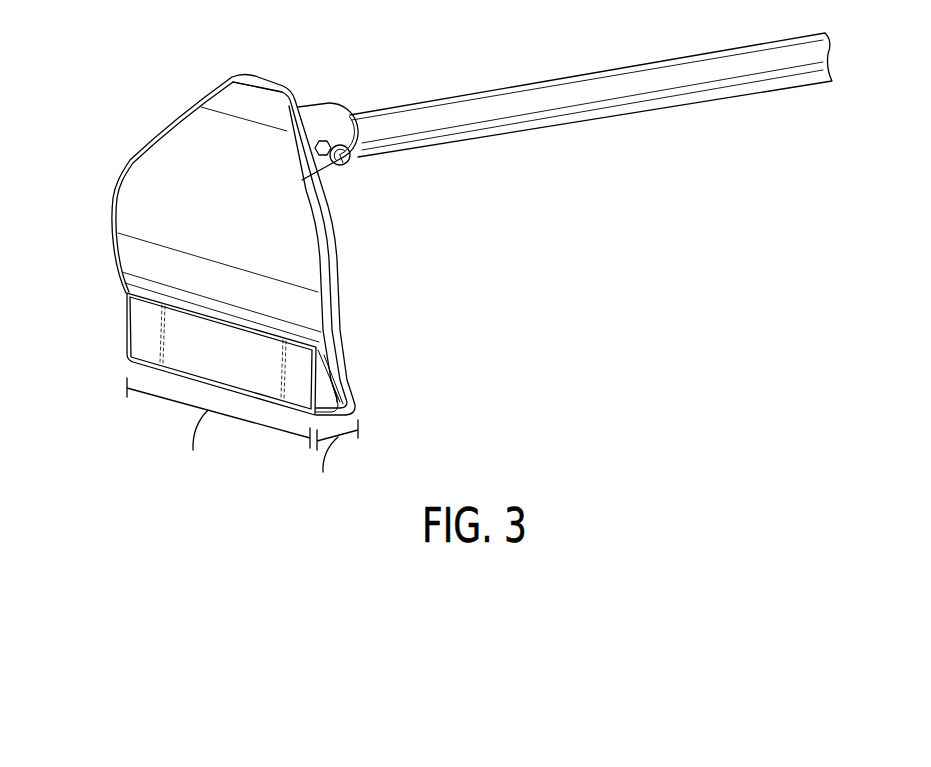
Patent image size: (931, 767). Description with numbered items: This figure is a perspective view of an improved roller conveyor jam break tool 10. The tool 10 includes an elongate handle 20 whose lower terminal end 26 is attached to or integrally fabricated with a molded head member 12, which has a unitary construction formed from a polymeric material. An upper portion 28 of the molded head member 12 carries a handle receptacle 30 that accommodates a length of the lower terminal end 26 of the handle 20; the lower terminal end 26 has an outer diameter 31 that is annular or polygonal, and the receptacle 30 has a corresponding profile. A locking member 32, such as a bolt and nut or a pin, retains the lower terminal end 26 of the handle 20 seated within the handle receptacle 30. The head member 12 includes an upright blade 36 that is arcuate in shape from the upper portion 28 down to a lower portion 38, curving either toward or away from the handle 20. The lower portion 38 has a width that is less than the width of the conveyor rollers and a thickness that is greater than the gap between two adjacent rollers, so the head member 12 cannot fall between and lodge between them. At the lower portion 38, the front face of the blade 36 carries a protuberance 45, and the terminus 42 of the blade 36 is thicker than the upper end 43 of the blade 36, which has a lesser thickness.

The roller conveyor jam break tool 10 is at (118, 84).
The molded head member 12 is at (128, 157).
The elongate handle 20 is at (585, 73).
The lower terminal end 26 is at (403, 103).
The upper portion 28 is at (217, 108).
The handle receptacle 30 is at (302, 106).
The outer diameter 31 is at (352, 163).
The locking member 32 is at (340, 160).
The upright blade 36 is at (212, 228).
The lower portion 38 is at (348, 373).
The terminus 42 is at (130, 367).
The upper end 43 is at (258, 86).
The protuberance 45 is at (138, 343).